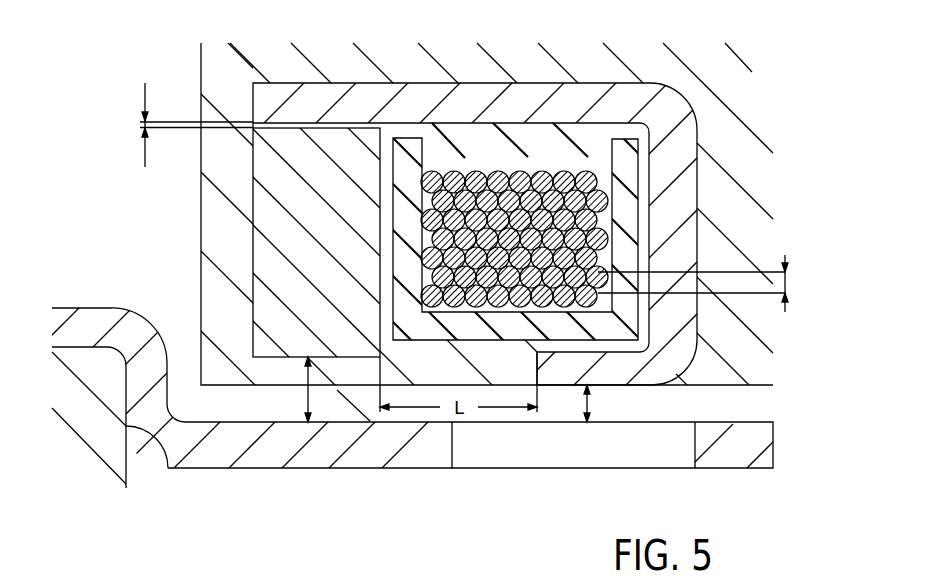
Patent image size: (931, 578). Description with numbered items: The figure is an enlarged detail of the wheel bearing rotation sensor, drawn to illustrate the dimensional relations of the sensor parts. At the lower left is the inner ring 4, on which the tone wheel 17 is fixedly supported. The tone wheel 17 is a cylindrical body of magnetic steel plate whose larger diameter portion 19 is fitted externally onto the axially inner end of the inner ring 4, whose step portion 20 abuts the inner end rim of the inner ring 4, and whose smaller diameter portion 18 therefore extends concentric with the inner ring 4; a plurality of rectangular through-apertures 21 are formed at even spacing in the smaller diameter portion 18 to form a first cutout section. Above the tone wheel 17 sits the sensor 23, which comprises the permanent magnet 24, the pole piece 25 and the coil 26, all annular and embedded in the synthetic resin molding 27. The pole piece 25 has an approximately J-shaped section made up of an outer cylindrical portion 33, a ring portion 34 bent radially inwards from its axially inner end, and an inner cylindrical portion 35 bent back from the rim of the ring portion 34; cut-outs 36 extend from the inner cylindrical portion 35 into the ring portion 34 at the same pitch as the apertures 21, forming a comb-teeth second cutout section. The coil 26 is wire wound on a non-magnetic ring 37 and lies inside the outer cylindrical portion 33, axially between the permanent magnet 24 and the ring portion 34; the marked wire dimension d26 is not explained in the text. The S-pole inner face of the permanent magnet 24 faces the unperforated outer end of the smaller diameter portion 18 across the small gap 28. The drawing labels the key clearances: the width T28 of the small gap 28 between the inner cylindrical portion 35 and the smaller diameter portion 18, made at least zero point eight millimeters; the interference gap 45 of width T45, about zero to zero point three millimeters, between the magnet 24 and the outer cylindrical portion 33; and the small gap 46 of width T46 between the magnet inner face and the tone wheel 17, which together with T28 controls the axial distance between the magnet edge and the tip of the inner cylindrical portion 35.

The inner ring 4 is at (92, 410).
The tone wheel 17 is at (425, 289).
The smaller diameter portion 18 is at (350, 460).
The larger diameter portion 19 is at (66, 316).
The step portion 20 is at (158, 358).
The through-apertures 21 is at (498, 460).
The sensor 23 is at (465, 289).
The permanent magnet 24 is at (282, 170).
The pole piece 25 is at (465, 289).
The coil 26 is at (567, 217).
The synthetic resin molding 27 is at (218, 213).
The small gap 28 is at (477, 417).
The outer cylindrical portion 33 is at (533, 100).
The ring portion 34 is at (667, 243).
The inner cylindrical portion 35 is at (600, 378).
The cut-outs 36 is at (645, 367).
The ring 37 is at (627, 172).
The interference gap 45 is at (253, 123).
The small gap 46 is at (185, 466).
The width of interference gap T45 is at (140, 127).
The width of small gap T46 is at (322, 395).
The width of small gap T28 is at (592, 405).
The coil wire diameter d26 is at (785, 293).